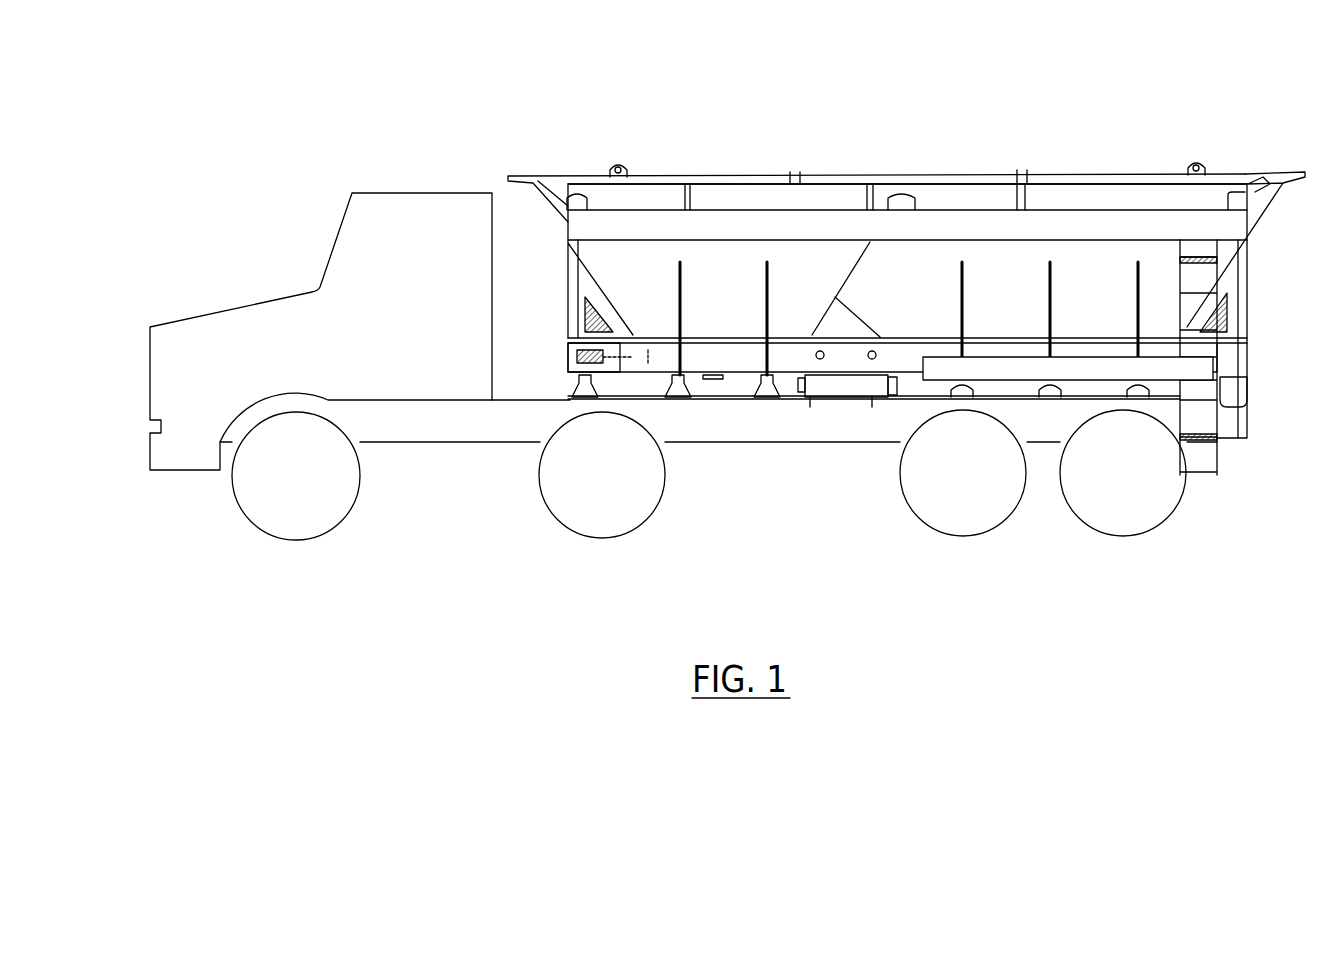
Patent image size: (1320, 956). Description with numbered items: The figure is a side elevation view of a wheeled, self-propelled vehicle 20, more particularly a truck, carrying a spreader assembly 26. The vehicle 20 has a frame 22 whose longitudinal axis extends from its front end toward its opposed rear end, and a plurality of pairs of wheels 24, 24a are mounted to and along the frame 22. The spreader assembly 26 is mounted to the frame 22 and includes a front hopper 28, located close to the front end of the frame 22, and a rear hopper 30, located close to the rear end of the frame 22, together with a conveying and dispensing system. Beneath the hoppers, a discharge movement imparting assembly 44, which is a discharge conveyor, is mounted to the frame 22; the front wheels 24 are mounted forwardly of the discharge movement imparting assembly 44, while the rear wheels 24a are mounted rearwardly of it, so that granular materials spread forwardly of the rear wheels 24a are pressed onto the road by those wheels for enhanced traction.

The vehicle 20 is at (393, 193).
The frame 22 is at (412, 428).
The front wheels 24 is at (248, 520).
The rear wheels 24a is at (925, 527).
The spreader assembly 26 is at (906, 302).
The front hopper 28 is at (906, 275).
The rear hopper 30 is at (938, 175).
The discharge movement imparting assembly 44 is at (828, 385).